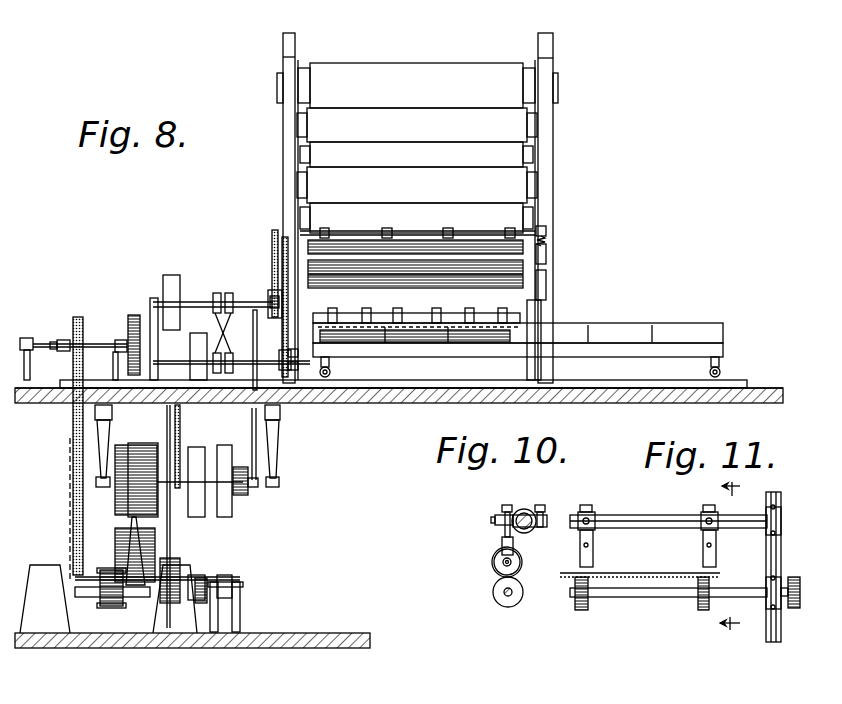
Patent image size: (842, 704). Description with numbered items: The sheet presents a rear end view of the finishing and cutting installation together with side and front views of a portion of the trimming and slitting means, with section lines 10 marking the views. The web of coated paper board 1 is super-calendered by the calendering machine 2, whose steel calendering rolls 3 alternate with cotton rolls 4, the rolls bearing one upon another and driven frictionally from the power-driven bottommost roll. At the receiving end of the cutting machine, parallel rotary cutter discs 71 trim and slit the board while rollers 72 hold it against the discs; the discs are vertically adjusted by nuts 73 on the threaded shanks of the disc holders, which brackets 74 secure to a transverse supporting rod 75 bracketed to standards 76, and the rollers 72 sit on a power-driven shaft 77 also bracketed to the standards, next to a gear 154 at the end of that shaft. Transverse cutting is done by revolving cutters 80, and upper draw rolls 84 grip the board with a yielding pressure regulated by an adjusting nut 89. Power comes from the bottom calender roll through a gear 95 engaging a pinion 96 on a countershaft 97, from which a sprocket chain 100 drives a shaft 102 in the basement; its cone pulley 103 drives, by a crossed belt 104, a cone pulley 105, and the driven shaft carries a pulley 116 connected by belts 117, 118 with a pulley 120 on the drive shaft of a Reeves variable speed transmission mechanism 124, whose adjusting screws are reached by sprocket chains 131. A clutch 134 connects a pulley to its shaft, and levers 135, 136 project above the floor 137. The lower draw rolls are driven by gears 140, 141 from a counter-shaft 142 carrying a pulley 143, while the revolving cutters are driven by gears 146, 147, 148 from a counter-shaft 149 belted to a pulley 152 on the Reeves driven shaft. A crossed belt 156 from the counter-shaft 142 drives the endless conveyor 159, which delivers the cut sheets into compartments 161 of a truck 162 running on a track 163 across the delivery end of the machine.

In FIG. 11, the web of coated paper board 1 is at (658, 573).
In FIG. 8, the calendering machine 2 is at (417, 126).
In FIG. 8, the steel calendering rolls 3 is at (416, 148).
In FIG. 8, the cotton rolls 4 is at (417, 155).
In FIG. 11, the section line 10 is at (743, 564).
In FIG. 8, the rotary cutter discs 71 is at (396, 238).
In FIG. 10, the rotary cutter discs 71 is at (492, 565).
In FIG. 10, the rollers 72 is at (494, 596).
In FIG. 11, the rollers 72 is at (700, 606).
In FIG. 10, the nuts 73 is at (500, 508).
In FIG. 11, the nuts 73 is at (583, 505).
In FIG. 10, the brackets 74 is at (524, 532).
In FIG. 8, the transverse supporting rod 75 is at (372, 237).
In FIG. 10, the transverse supporting rod 75 is at (528, 513).
In FIG. 11, the transverse supporting rod 75 is at (675, 521).
In FIG. 11, the standards 76 is at (782, 520).
In FIG. 10, the power-driven shaft 77 is at (507, 597).
In FIG. 11, the power-driven shaft 77 is at (732, 588).
In FIG. 8, the revolving cutters 80 is at (547, 290).
In FIG. 8, the upper draw rolls 84 is at (547, 263).
In FIG. 8, the adjusting nut 89 is at (547, 239).
In FIG. 8, the gear 95 is at (133, 316).
In FIG. 8, the pinion 96 is at (120, 340).
In FIG. 8, the countershaft 97 is at (47, 344).
In FIG. 8, the sprocket chain 100 is at (73, 428).
In FIG. 8, the shaft 102 is at (172, 553).
In FIG. 8, the cone pulley 103 is at (118, 548).
In FIG. 8, the crossed belt 104 is at (135, 519).
In FIG. 8, the cone pulley 105 is at (140, 455).
In FIG. 8, the pulley 116 is at (236, 466).
In FIG. 8, the belt 117 is at (200, 524).
In FIG. 8, the belt 118 is at (222, 543).
In FIG. 8, the pulley 120 is at (212, 579).
In FIG. 8, the Reeves variable speed transmission mechanism 124 is at (103, 605).
In FIG. 8, the sprocket chains 131 is at (69, 497).
In FIG. 8, the clutch 134 is at (246, 497).
In FIG. 8, the lever 135 is at (182, 422).
In FIG. 8, the lever 136 is at (258, 452).
In FIG. 8, the floor 137 is at (758, 399).
In FIG. 8, the gear 140 is at (275, 240).
In FIG. 8, the gear 141 is at (270, 300).
In FIG. 8, the counter-shaft 142 is at (193, 301).
In FIG. 8, the pulley 143 is at (172, 278).
In FIG. 8, the gear 146 is at (285, 240).
In FIG. 8, the gear 147 is at (255, 348).
In FIG. 8, the gear 148 is at (262, 365).
In FIG. 8, the counter-shaft 149 is at (272, 365).
In FIG. 8, the pulley 152 is at (207, 600).
In FIG. 11, the gear 154 is at (795, 577).
In FIG. 8, the crossed belt 156 is at (215, 330).
In FIG. 8, the endless conveyor 159 is at (460, 310).
In FIG. 8, the compartments 161 is at (570, 330).
In FIG. 8, the truck 162 is at (719, 318).
In FIG. 8, the track 163 is at (735, 380).